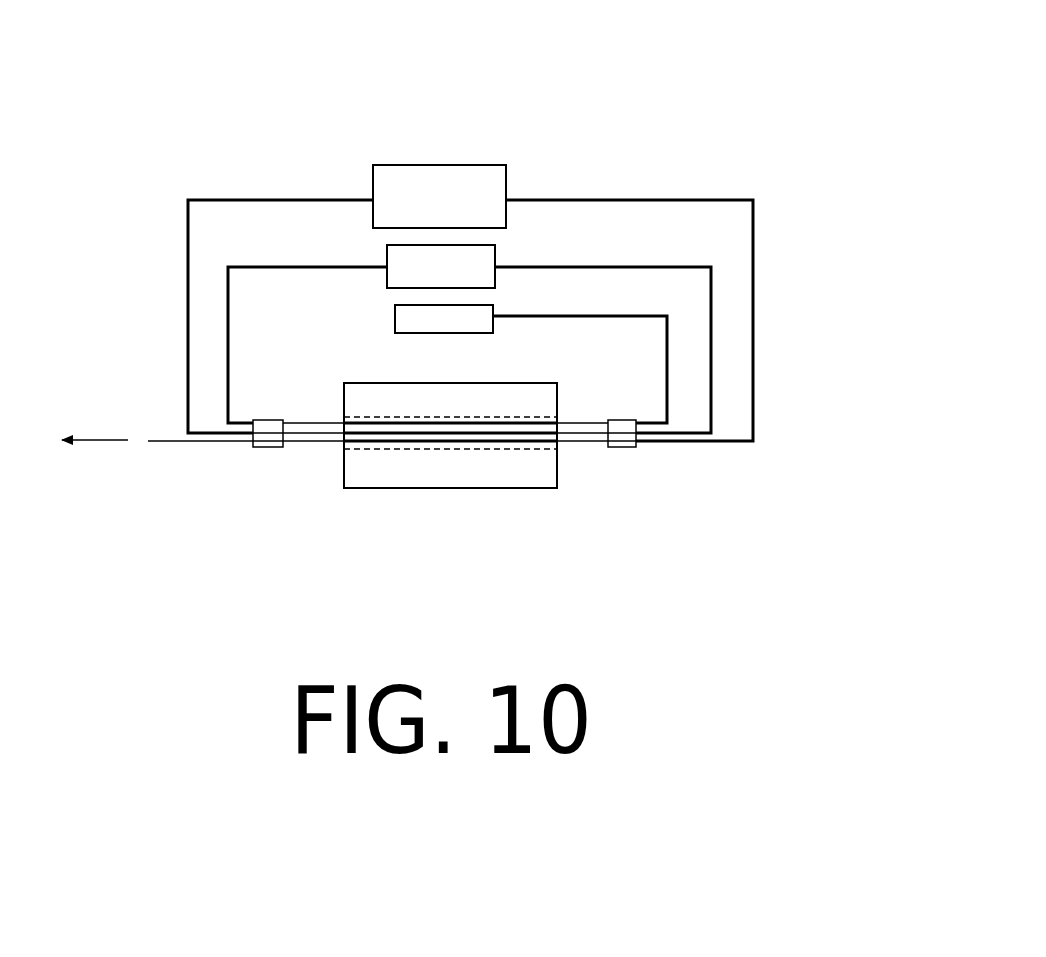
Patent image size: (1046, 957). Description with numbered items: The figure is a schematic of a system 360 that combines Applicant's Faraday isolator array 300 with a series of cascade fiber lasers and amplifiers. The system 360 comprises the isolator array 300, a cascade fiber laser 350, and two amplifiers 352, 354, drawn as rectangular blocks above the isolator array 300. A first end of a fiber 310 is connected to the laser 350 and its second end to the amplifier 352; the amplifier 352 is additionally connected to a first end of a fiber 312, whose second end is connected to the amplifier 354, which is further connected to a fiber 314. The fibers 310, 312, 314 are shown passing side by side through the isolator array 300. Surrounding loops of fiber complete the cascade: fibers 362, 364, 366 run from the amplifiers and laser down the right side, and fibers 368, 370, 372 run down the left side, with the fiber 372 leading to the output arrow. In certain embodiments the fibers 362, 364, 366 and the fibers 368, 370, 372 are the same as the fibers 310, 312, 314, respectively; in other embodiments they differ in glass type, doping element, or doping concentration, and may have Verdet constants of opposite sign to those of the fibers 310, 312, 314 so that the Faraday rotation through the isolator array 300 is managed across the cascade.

The Faraday isolator array 300 is at (366, 531).
The fiber 310 is at (502, 422).
The fiber 312 is at (482, 435).
The fiber 314 is at (433, 445).
The cascade fiber laser 350 is at (444, 319).
The amplifier 352 is at (441, 266).
The amplifier 354 is at (439, 196).
The system 360 is at (646, 110).
The fiber 362 is at (753, 228).
The fiber 364 is at (711, 300).
The fiber 366 is at (667, 382).
The fiber 368 is at (188, 240).
The fiber 370 is at (228, 330).
The fiber 372 is at (174, 440).